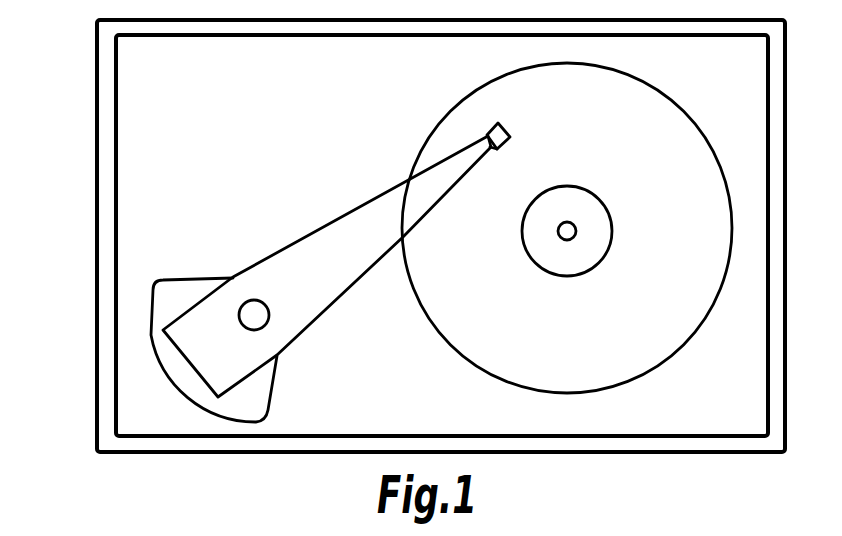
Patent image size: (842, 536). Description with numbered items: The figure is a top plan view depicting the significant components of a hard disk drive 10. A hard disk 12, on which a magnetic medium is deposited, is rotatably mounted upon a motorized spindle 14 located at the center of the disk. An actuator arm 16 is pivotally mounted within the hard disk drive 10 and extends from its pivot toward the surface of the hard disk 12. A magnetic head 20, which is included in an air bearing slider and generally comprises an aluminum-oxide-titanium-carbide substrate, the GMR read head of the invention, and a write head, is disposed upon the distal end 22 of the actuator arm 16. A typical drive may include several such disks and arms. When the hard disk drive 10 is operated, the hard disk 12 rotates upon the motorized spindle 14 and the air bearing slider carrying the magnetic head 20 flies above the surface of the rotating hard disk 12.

The hard disk drive 10 is at (95, 152).
The hard disk 12 is at (463, 346).
The motorized spindle 14 is at (603, 232).
The actuator arm 16 is at (329, 221).
The magnetic head 20 is at (503, 127).
The distal end 22 is at (491, 150).